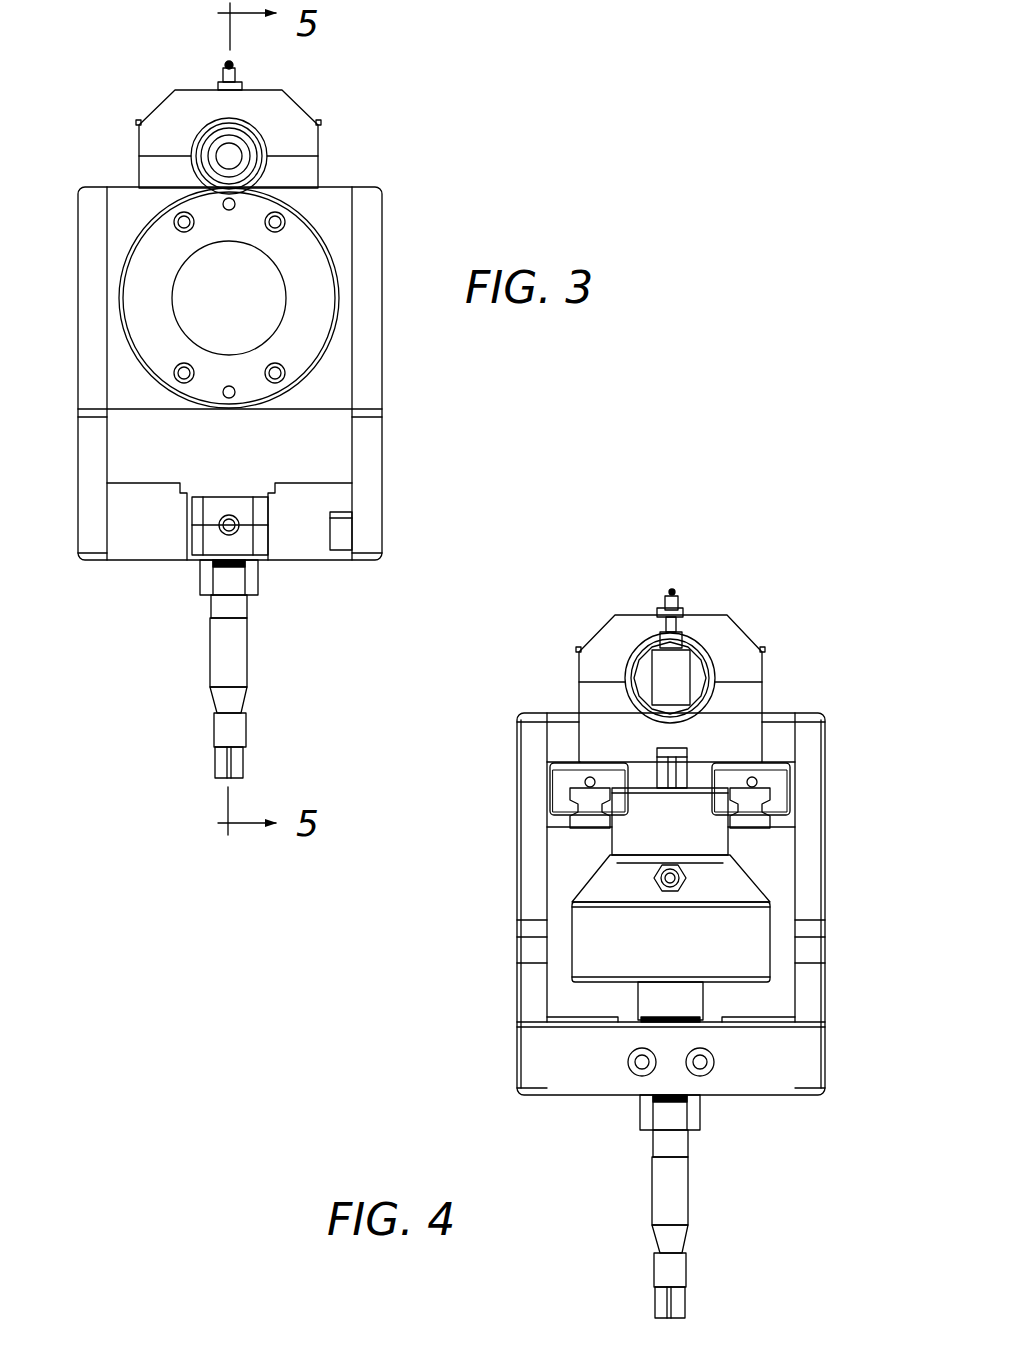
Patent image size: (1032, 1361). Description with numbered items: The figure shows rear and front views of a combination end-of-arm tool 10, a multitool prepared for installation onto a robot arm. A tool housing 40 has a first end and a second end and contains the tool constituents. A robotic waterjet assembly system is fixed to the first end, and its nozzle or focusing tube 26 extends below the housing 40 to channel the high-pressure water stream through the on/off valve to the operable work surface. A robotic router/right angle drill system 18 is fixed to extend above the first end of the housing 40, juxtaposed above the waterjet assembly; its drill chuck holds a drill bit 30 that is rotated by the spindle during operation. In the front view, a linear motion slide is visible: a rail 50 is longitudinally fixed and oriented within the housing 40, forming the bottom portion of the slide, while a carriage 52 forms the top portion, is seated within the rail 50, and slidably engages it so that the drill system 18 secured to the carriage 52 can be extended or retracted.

In FIG. 3, the combination end-of-arm tool 10 is at (74, 106).
In FIG. 4, the combination end-of-arm tool 10 is at (850, 596).
In FIG. 3, the router/right angle drill system 18 is at (308, 98).
In FIG. 4, the router/right angle drill system 18 is at (670, 688).
In FIG. 3, the nozzle or focusing tube 26 is at (270, 650).
In FIG. 4, the nozzle or focusing tube 26 is at (700, 1188).
In FIG. 4, the drill bit 30 is at (678, 590).
In FIG. 3, the tool housing 40 is at (338, 360).
In FIG. 4, the tool housing 40 is at (515, 897).
In FIG. 4, the rail 50 is at (758, 808).
In FIG. 4, the carriage 52 is at (777, 778).